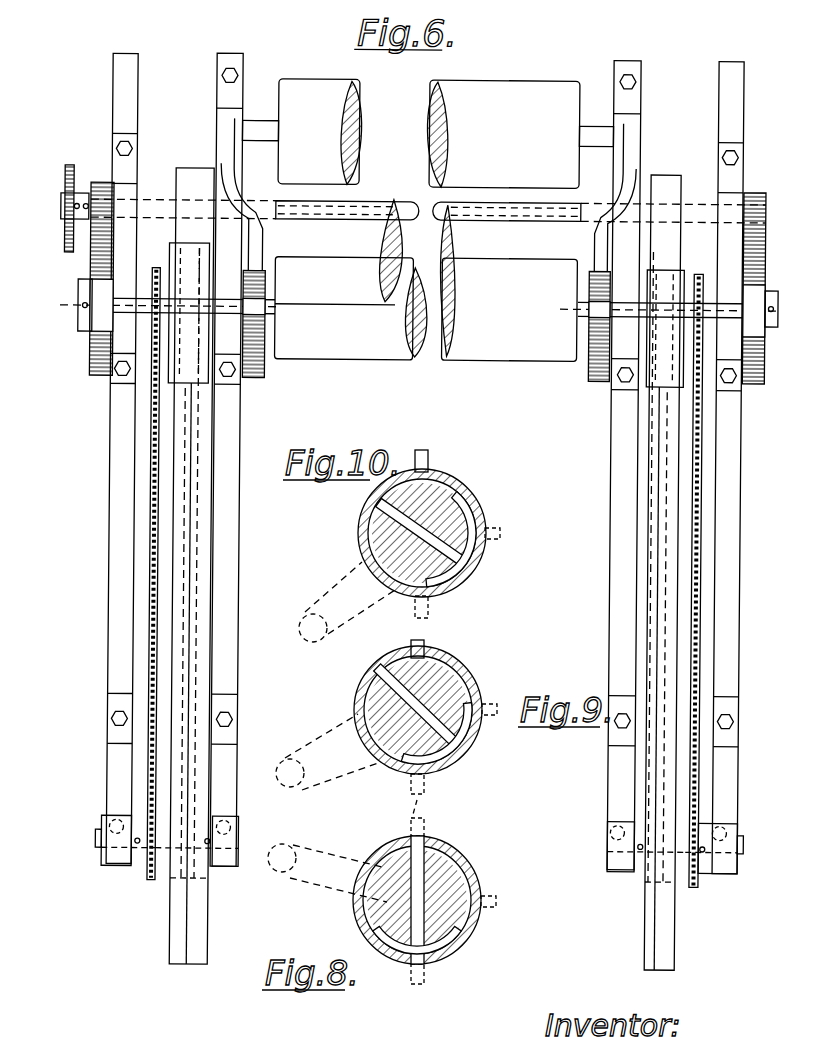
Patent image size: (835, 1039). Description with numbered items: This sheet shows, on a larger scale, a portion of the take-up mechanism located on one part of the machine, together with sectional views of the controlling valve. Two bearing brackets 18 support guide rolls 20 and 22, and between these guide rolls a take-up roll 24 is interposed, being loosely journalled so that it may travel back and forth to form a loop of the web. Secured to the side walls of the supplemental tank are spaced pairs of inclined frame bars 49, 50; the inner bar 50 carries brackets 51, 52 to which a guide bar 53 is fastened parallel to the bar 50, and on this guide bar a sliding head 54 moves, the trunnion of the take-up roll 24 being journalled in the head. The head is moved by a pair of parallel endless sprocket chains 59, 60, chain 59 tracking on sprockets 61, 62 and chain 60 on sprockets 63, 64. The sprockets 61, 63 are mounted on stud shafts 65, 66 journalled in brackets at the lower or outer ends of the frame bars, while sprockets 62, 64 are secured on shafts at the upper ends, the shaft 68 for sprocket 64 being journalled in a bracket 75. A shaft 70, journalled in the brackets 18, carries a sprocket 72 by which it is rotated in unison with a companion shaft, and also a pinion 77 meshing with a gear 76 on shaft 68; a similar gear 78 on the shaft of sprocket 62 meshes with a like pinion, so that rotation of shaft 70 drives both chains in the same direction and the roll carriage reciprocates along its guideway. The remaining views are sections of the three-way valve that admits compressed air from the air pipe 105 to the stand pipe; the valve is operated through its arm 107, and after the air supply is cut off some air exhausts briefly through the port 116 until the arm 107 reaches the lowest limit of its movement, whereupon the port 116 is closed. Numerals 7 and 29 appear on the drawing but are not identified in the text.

In FIG. 6, the shaft 7 is at (78, 308).
In FIG. 6, the bearing bracket 18 is at (228, 172).
In FIG. 6, the guide roll 20 is at (337, 294).
In FIG. 6, the guide roll 22 is at (512, 88).
In FIG. 6, the take-up roll 24 is at (502, 355).
In FIG. 6, the arm 29 is at (250, 196).
In FIG. 6, the inclined frame bar 49 is at (110, 558).
In FIG. 6, the inner frame bar 50 is at (231, 518).
In FIG. 6, the bracket 51 is at (226, 736).
In FIG. 6, the bracket 52 is at (241, 362).
In FIG. 6, the guide bar 53 is at (203, 912).
In FIG. 6, the sliding head 54 is at (177, 373).
In FIG. 6, the endless sprocket chain 59 is at (201, 578).
In FIG. 6, the endless sprocket chain 60 is at (148, 592).
In FIG. 6, the sprocket 61 is at (182, 884).
In FIG. 6, the sprocket 62 is at (188, 240).
In FIG. 6, the sprocket 63 is at (146, 864).
In FIG. 6, the sprocket 64 is at (143, 285).
In FIG. 6, the stud shaft 65 is at (243, 846).
In FIG. 6, the stud shaft 66 is at (100, 842).
In FIG. 6, the shaft 68 is at (78, 310).
In FIG. 6, the shaft 70 is at (400, 206).
In FIG. 6, the sprocket 72 is at (64, 192).
In FIG. 6, the bracket 75 is at (90, 260).
In FIG. 6, the gear 76 is at (90, 372).
In FIG. 6, the pinion 77 is at (98, 183).
In FIG. 6, the gear 78 is at (264, 366).
In FIG. 10, the air pipe 105 is at (452, 612).
In FIG. 9, the air pipe 105 is at (426, 642).
In FIG. 8, the air pipe 105 is at (412, 988).
In FIG. 10, the valve arm 107 is at (333, 586).
In FIG. 9, the valve arm 107 is at (328, 776).
In FIG. 8, the valve arm 107 is at (382, 900).
In FIG. 10, the exhaust port 116 is at (500, 533).